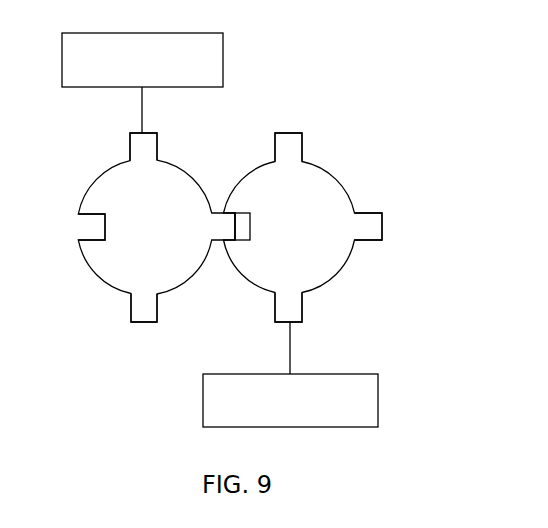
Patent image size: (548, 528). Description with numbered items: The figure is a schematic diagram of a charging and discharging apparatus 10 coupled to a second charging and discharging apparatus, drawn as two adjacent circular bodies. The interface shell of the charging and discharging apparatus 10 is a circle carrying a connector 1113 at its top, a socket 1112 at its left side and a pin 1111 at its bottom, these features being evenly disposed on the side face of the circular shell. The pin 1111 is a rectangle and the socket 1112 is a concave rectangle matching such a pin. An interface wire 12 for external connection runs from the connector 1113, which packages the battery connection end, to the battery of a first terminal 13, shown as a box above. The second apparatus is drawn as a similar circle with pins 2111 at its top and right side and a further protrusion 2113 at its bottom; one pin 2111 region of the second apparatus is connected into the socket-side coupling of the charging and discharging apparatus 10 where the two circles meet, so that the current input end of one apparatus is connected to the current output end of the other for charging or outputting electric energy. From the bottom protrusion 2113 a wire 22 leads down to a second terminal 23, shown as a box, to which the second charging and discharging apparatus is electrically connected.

The charging and discharging apparatus 10 is at (87, 150).
The interface wire for external connection 12 is at (142, 111).
The first terminal 13 is at (168, 87).
The pin 1111 is at (152, 322).
The socket 1112 is at (90, 238).
The connector 1113 is at (158, 145).
The pin of the second charging and discharging apparatus 2111 is at (302, 150).
The bottom protrusion of second coupling member 2113 is at (303, 305).
The second connecting line 22 is at (292, 362).
The second terminal 23 is at (350, 374).